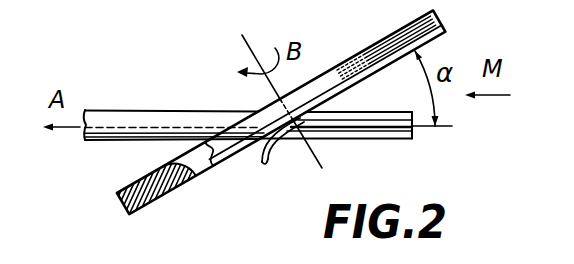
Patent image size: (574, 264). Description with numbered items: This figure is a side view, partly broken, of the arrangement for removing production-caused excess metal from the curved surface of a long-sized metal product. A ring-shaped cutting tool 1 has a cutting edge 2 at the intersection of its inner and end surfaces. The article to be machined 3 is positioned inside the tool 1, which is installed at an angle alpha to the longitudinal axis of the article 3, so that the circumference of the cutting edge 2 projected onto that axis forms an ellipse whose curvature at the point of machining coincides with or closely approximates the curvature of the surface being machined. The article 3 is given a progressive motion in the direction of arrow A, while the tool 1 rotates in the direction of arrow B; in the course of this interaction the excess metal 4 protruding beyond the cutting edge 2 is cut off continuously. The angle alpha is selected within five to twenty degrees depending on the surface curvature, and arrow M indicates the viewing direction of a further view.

The ring-shaped cutting tool 1 is at (281, 132).
The cutting edge 2 is at (203, 180).
The article to be machined 3 is at (120, 120).
The excess metal 4 is at (270, 158).